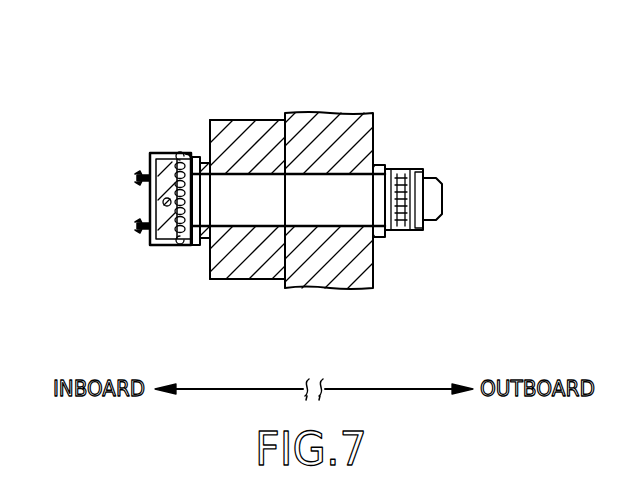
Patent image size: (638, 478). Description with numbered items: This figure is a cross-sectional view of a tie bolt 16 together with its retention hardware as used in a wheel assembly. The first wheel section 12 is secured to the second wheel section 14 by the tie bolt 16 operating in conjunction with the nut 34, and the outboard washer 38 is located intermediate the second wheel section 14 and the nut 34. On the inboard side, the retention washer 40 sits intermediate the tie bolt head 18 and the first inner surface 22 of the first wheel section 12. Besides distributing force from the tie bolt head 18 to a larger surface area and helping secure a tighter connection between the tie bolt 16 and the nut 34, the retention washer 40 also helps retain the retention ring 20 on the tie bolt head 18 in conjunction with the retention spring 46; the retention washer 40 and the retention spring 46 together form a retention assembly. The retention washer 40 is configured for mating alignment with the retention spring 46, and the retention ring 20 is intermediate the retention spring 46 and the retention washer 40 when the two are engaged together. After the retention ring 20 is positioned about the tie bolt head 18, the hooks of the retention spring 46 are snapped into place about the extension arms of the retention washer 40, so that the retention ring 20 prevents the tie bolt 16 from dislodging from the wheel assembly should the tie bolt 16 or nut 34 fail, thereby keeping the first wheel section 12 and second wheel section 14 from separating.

The first wheel section 12 is at (233, 280).
The second wheel section 14 is at (328, 288).
The tie bolt 16 is at (301, 215).
The tie bolt head 18 is at (176, 250).
The retention ring 20 is at (166, 153).
The first inner surface 22 is at (208, 150).
The nut 34 is at (413, 231).
The outboard washer 38 is at (392, 166).
The retention washer 40 is at (195, 155).
The retention spring 46 is at (148, 231).